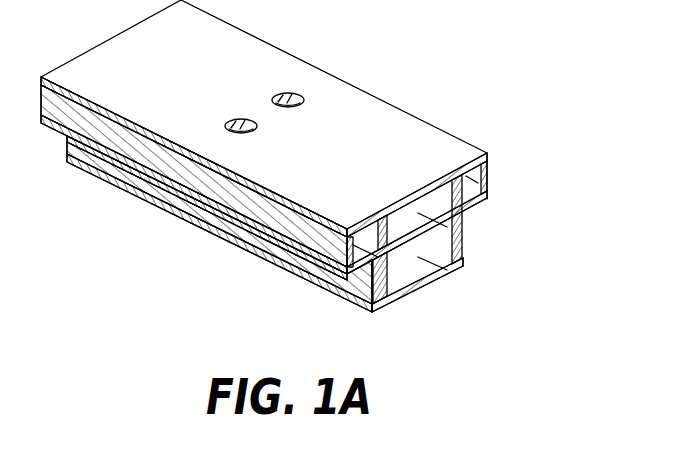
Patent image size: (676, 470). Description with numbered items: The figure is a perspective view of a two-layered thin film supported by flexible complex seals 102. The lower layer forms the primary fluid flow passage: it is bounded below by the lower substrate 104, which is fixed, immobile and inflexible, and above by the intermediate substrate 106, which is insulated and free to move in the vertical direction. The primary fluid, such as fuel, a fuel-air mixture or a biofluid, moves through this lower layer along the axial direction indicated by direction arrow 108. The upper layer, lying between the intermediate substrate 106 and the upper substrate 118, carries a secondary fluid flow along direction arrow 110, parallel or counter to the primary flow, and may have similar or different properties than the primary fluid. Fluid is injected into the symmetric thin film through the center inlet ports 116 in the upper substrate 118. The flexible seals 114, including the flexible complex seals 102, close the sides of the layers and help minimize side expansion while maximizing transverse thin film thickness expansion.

The flexible complex seal 102 is at (474, 178).
The lower substrate 104 is at (433, 272).
The intermediate substrate 106 is at (458, 205).
The primary fluid flow direction arrow 108 is at (443, 268).
The secondary fluid flow direction arrow 110 is at (467, 235).
The flexible seal 114 is at (463, 223).
The center inlet port 116 is at (241, 119).
The upper substrate 118 is at (410, 120).